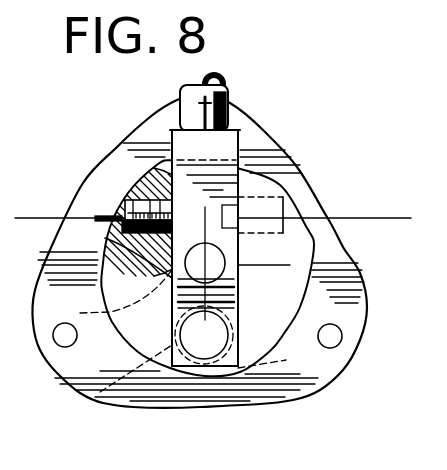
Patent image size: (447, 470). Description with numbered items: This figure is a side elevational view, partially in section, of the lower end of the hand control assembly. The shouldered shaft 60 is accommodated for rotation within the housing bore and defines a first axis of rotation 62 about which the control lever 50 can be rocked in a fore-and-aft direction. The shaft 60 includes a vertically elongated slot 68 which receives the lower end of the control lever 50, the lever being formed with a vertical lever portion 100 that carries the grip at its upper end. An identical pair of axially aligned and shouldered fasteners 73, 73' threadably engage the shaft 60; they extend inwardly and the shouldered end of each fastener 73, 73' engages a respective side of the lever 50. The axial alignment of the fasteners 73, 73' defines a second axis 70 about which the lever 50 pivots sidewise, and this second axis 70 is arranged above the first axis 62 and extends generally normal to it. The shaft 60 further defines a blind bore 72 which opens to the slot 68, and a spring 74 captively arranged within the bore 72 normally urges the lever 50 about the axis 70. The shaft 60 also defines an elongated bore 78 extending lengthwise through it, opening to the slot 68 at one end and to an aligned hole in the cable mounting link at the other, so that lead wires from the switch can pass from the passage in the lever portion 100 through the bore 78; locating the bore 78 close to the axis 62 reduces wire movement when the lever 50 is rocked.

The vertical lever portion 100 is at (227, 97).
The control lever 50 is at (248, 134).
The shouldered fastener 73 is at (121, 218).
The shouldered fastener 73' is at (290, 187).
The second axis 70 is at (352, 218).
The shouldered shaft 60 is at (290, 265).
The first axis of rotation 62 is at (238, 279).
The vertically elongated slot 68 is at (238, 296).
The blind bore 72 is at (279, 359).
The elongated bore 78 is at (110, 296).
The spring 74 is at (100, 398).